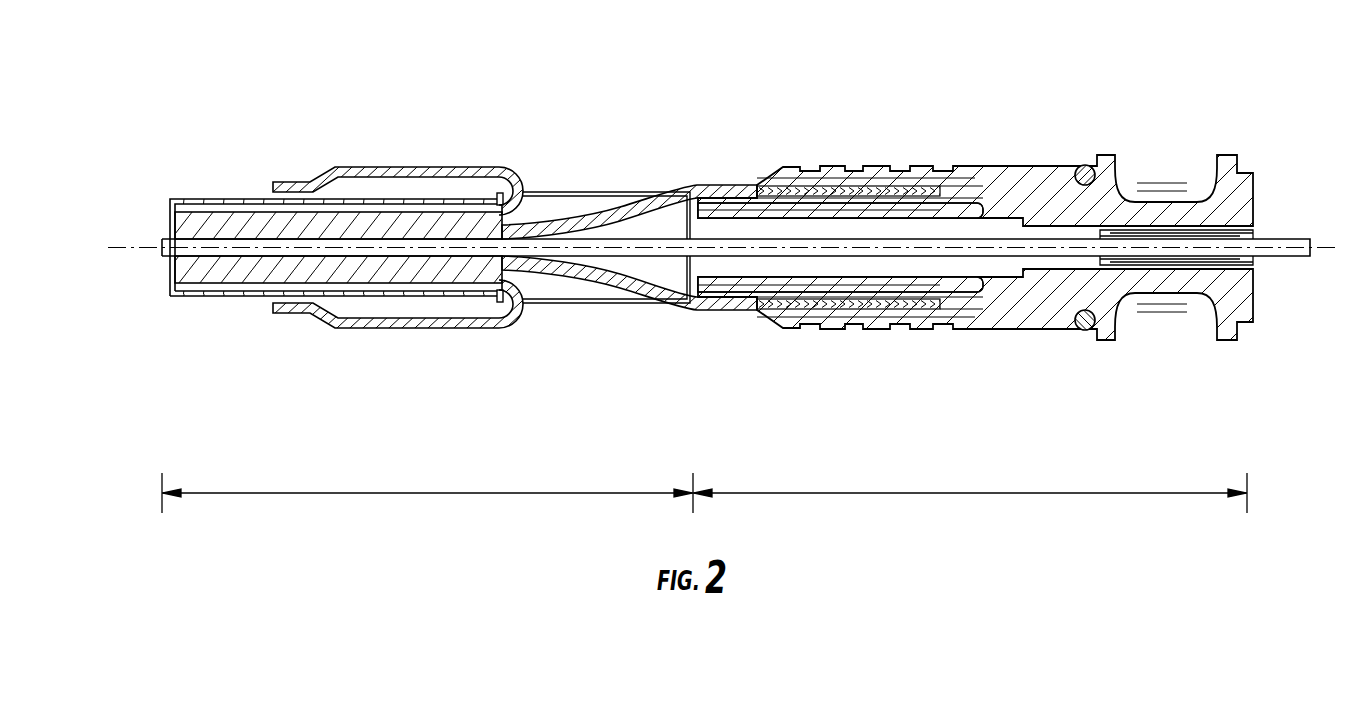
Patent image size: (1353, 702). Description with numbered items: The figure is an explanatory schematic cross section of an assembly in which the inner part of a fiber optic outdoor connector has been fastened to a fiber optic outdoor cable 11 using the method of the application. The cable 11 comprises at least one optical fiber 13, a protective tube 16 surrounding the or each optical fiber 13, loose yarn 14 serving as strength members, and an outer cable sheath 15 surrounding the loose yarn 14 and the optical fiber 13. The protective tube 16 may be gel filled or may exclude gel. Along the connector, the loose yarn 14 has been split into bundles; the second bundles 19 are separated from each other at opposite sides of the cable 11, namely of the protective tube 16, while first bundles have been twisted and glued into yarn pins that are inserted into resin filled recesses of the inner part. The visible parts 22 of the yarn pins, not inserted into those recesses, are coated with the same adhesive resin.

The fiber optic outdoor cable 11 is at (232, 197).
The optical fiber 13 is at (160, 251).
The loose yarn 14 is at (200, 222).
The outer cable sheath 15 is at (208, 300).
The protective tube 16 is at (157, 232).
The second bundles 19 is at (395, 168).
The visible parts of yarn pins 22 is at (620, 203).